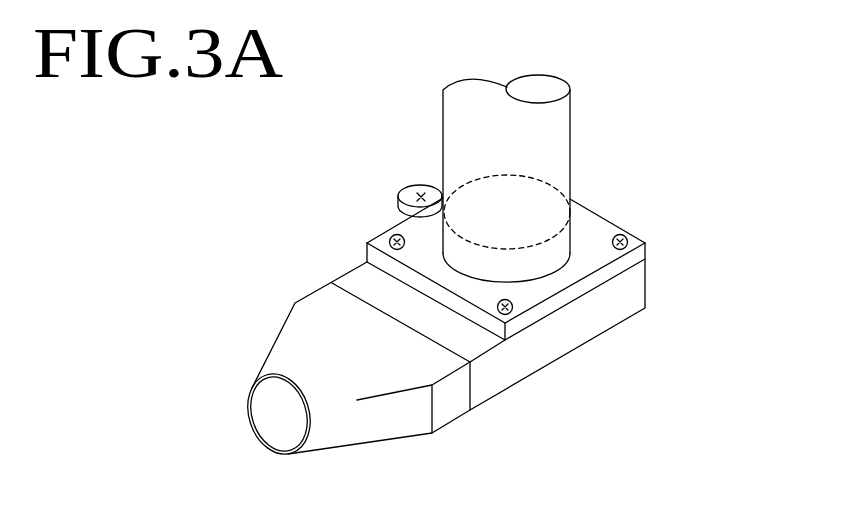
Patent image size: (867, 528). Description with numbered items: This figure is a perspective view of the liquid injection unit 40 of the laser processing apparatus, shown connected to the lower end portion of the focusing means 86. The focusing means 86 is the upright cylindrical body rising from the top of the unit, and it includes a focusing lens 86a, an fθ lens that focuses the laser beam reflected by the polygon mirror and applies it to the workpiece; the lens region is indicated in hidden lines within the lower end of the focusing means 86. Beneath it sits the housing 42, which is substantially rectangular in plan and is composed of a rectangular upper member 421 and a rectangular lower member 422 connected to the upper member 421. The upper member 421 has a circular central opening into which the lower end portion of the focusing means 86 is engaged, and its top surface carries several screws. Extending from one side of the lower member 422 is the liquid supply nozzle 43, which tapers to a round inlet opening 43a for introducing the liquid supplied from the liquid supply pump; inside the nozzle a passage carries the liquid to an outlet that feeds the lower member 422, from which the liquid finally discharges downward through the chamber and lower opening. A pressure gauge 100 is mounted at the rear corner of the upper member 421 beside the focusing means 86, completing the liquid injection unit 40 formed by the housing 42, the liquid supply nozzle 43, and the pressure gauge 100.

The liquid injection unit 40 is at (653, 217).
The housing 42 is at (742, 252).
The upper member 421 is at (647, 256).
The lower member 422 is at (637, 302).
The liquid supply nozzle 43 is at (316, 308).
The inlet opening 43a is at (273, 412).
The focusing means 86 is at (556, 119).
The focusing lens 86a is at (557, 203).
The pressure gauge 100 is at (410, 190).